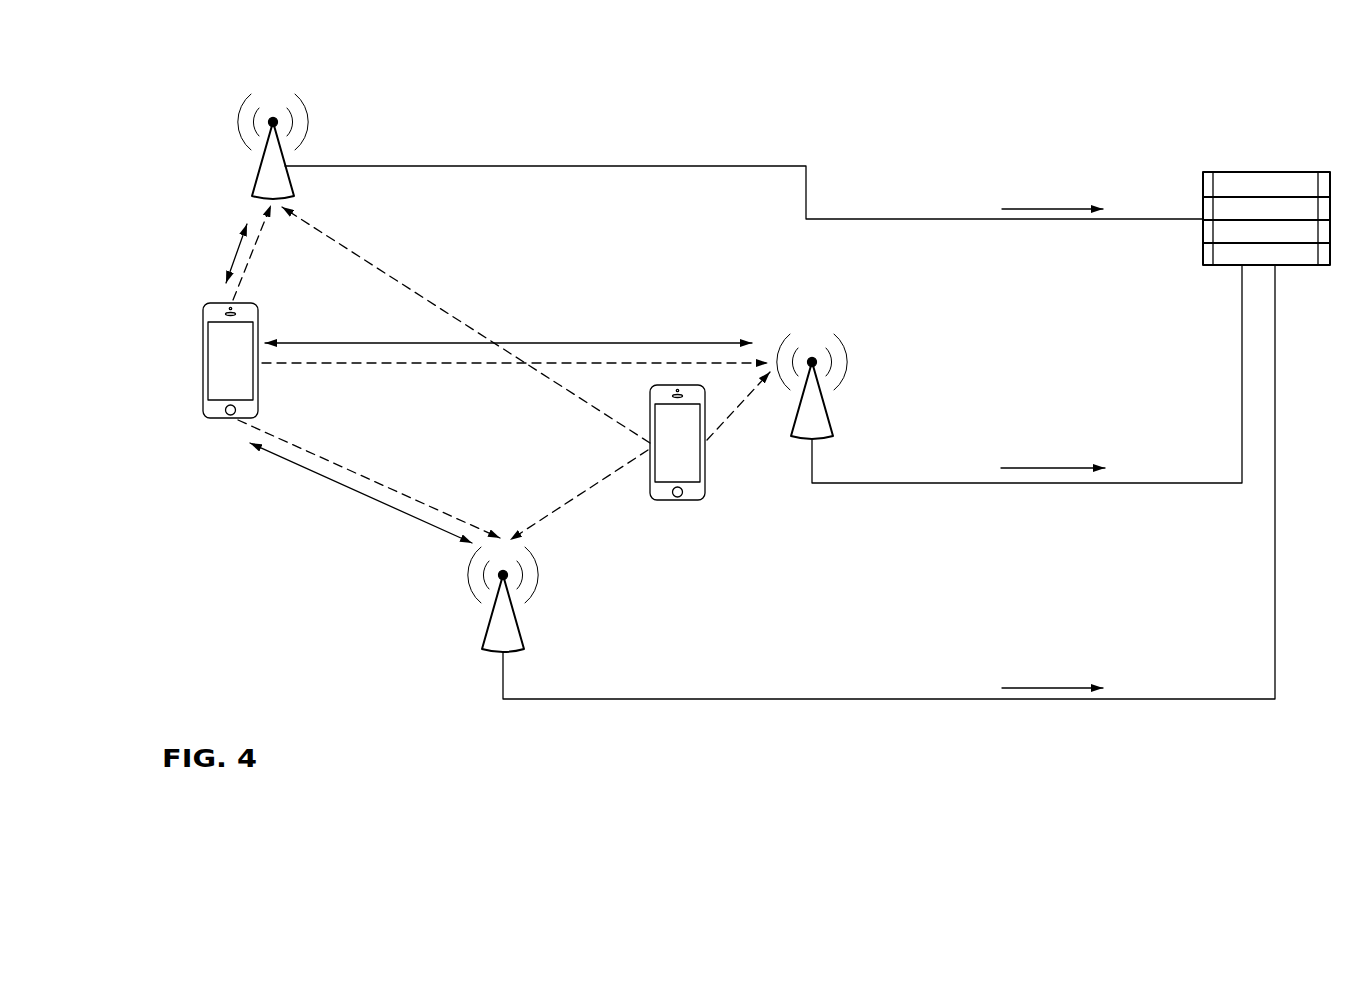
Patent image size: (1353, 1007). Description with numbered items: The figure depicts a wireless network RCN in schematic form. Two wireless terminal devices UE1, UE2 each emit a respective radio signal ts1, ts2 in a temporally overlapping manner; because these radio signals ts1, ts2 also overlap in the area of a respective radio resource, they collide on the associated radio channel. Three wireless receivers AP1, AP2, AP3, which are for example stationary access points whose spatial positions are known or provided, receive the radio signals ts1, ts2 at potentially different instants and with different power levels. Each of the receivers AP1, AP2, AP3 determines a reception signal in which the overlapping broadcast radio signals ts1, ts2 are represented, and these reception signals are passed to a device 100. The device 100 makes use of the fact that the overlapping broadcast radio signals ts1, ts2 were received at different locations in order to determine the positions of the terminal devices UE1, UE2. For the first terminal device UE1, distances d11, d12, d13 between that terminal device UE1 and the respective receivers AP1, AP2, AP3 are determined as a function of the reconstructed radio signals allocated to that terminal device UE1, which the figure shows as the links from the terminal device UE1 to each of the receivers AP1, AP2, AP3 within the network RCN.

The device 100 is at (1258, 180).
The wireless receiver AP1 is at (267, 178).
The wireless receiver AP2 is at (820, 417).
The wireless receiver AP3 is at (497, 626).
The wireless terminal device UE1 is at (215, 352).
The wireless terminal device UE2 is at (683, 455).
The distance d11 is at (237, 250).
The distance d12 is at (603, 340).
The distance d13 is at (333, 481).
The radio signal ts1 is at (367, 478).
The radio signal ts2 is at (577, 497).
The wireless network RCN is at (550, 472).